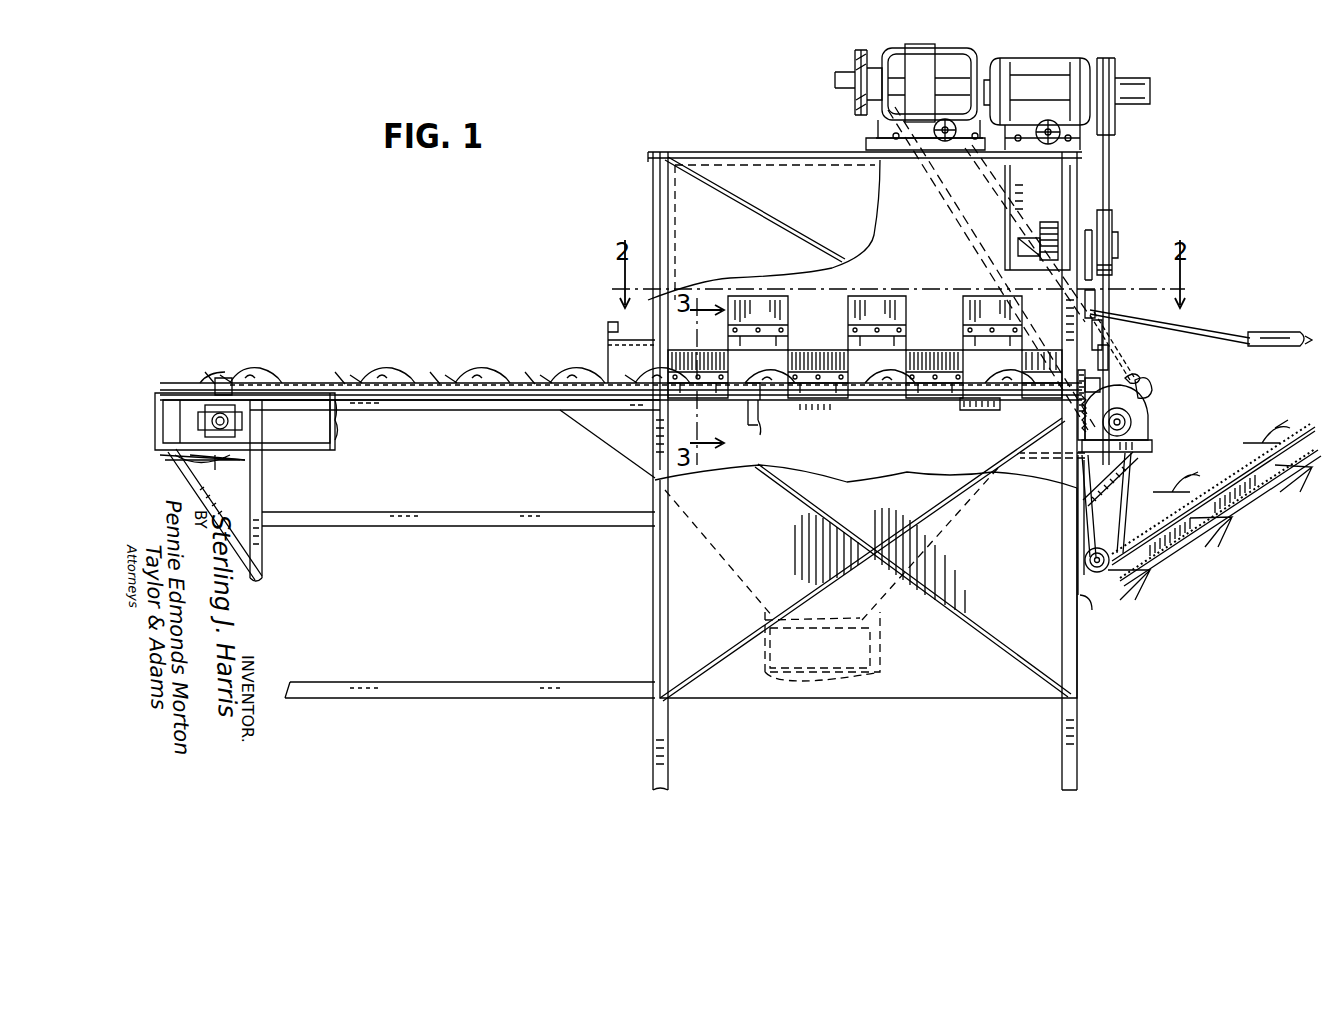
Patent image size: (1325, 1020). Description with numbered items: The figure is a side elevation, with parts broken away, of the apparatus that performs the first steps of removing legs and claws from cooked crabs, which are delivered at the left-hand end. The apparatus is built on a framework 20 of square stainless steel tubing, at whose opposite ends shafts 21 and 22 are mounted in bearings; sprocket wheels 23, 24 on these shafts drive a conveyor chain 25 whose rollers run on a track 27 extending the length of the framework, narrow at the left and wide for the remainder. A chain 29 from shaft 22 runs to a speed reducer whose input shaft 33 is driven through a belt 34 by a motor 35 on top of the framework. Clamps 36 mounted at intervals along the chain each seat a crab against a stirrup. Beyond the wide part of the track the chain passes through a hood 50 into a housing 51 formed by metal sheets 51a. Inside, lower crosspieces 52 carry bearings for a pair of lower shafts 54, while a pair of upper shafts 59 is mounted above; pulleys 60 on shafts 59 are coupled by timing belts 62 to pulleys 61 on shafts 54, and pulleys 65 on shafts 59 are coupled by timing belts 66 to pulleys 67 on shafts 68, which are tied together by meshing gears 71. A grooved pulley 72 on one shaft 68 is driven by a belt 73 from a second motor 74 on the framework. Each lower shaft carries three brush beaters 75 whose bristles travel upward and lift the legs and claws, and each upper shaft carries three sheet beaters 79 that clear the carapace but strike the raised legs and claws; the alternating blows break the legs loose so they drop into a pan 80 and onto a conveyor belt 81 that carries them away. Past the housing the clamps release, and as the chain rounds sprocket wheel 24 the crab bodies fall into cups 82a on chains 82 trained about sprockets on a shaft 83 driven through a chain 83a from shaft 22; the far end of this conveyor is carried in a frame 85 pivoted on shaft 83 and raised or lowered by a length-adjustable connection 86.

The framework 20 is at (655, 590).
The shaft 21 is at (250, 422).
The shaft 22 is at (1140, 428).
The sprocket wheel 23 is at (190, 422).
The sprocket wheel 24 is at (1147, 398).
The conveyor chain 25 is at (420, 385).
The track 27 is at (555, 400).
The chain 29 is at (1105, 382).
The input shaft 33 is at (835, 78).
The belt 34 is at (862, 58).
The motor 35 is at (920, 52).
The clamp 36 is at (232, 368).
The hood 50 is at (608, 328).
The housing 51 is at (720, 149).
The metal sheet 51a is at (798, 170).
The lower crosspiece 52 is at (755, 400).
The shaft 54 is at (970, 400).
The shaft 59 is at (932, 345).
The pulley 60 is at (1100, 332).
The pulley 61 is at (1130, 378).
The timing belt 62 is at (1108, 357).
The pulley 65 is at (1070, 366).
The timing belt 66 is at (1093, 303).
The pulley 67 is at (1093, 222).
The shaft 68 is at (1114, 245).
The meshing gear 71 is at (1052, 225).
The grooved pulley 72 is at (1112, 222).
The belt 73 is at (1108, 155).
The motor 74 is at (1050, 72).
The beater 75 is at (672, 360).
The beater 79 is at (750, 298).
The pan 80 is at (640, 458).
The conveyor belt 81 is at (875, 668).
The chain 82 is at (1245, 492).
The cup 82a is at (1180, 480).
The shaft 83 is at (1098, 580).
The chain 83a is at (1128, 482).
The frame 85 is at (1157, 540).
The connection 86 is at (1230, 328).